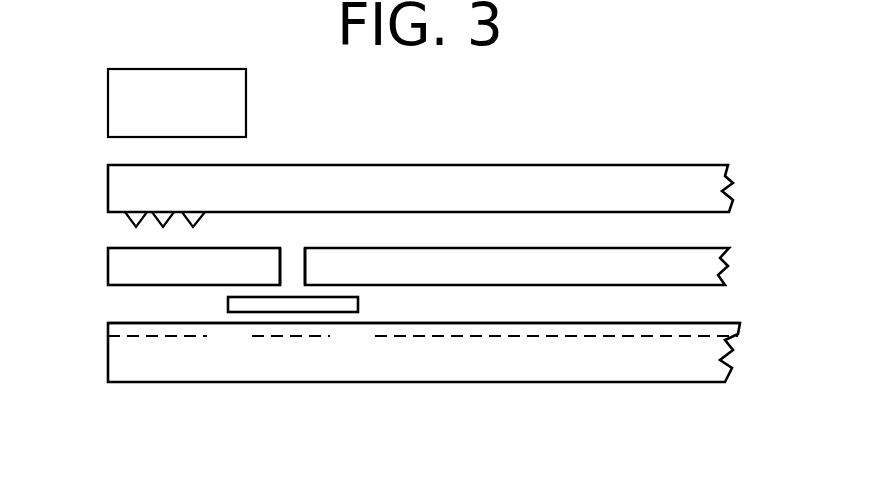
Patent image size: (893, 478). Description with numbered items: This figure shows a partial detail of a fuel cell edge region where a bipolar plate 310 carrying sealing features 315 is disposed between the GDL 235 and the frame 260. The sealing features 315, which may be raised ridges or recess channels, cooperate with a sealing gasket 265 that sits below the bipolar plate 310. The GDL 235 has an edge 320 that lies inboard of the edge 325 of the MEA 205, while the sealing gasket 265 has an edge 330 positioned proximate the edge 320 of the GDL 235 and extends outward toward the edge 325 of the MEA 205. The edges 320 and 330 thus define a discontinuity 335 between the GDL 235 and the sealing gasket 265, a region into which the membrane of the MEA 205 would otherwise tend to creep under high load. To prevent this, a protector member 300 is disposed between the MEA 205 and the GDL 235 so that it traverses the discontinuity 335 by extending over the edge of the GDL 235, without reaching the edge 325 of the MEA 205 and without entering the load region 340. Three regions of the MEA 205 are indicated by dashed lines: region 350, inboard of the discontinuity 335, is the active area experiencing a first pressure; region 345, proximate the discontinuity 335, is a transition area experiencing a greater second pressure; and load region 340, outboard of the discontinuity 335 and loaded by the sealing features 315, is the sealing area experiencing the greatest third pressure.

The frame 260 is at (193, 117).
The bipolar plate 310 is at (697, 190).
The sealing features 315 is at (124, 216).
The sealing gasket 265 is at (122, 268).
The GDL 235 is at (705, 266).
The MEA 205 is at (705, 360).
The edge of MEA 325 is at (108, 323).
The protector member 300 is at (358, 305).
The edge of sealing gasket 330 is at (279, 283).
The discontinuity 335 is at (292, 248).
The edge of GDL 320 is at (307, 283).
The load region 340 is at (168, 338).
The transition region 345 is at (290, 338).
The active area region 350 is at (483, 338).